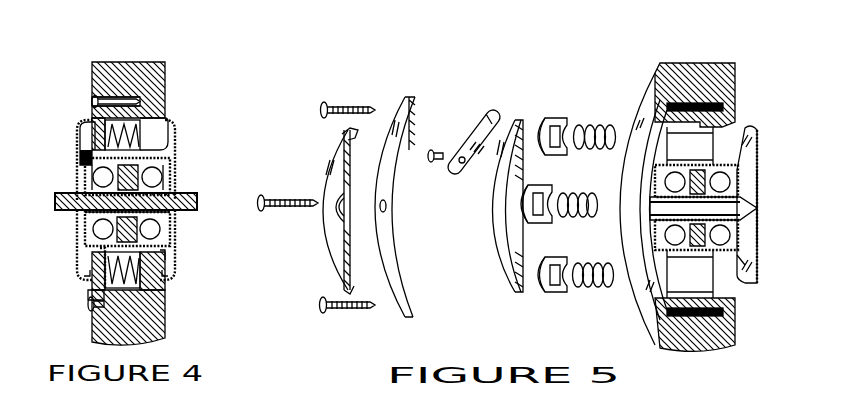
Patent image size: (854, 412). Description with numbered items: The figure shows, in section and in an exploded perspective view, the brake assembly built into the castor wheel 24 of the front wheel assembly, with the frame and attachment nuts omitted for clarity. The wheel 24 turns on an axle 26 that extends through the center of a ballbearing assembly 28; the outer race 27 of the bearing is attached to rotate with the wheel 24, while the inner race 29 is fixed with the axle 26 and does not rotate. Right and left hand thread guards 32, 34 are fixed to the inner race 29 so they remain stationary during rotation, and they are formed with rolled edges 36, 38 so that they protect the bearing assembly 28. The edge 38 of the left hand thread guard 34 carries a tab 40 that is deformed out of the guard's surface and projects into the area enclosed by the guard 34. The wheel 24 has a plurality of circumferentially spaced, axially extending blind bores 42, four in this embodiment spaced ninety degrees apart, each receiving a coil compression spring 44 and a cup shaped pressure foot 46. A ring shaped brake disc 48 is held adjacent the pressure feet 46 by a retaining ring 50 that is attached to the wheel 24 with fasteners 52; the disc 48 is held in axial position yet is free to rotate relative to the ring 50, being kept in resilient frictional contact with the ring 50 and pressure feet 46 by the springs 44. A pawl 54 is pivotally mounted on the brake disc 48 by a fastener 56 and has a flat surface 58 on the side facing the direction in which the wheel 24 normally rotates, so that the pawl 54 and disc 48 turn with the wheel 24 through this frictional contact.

In FIG. 4, the castor wheel 24 is at (120, 62).
In FIG. 5, the castor wheel 24 is at (650, 95).
In FIG. 4, the axle 26 is at (204, 203).
In FIG. 4, the outer race 27 is at (160, 250).
In FIG. 5, the outer race 27 is at (740, 265).
In FIG. 4, the ballbearing assembly 28 is at (172, 165).
In FIG. 5, the ballbearing assembly 28 is at (660, 232).
In FIG. 4, the inner race 29 is at (172, 220).
In FIG. 5, the inner race 29 is at (745, 212).
In FIG. 4, the right hand thread guard 32 is at (172, 180).
In FIG. 5, the right hand thread guard 32 is at (755, 175).
In FIG. 4, the left hand thread guard 34 is at (78, 160).
In FIG. 5, the left hand thread guard 34 is at (333, 240).
In FIG. 4, the rolled edge 36 is at (175, 130).
In FIG. 5, the rolled edge 36 is at (747, 135).
In FIG. 4, the rolled edge 38 is at (82, 276).
In FIG. 5, the rolled edge 38 is at (350, 292).
In FIG. 4, the tab 40 is at (82, 130).
In FIG. 5, the tab 40 is at (355, 140).
In FIG. 4, the blind bores 42 is at (158, 122).
In FIG. 5, the blind bores 42 is at (697, 140).
In FIG. 4, the coil compression spring 44 is at (145, 128).
In FIG. 5, the coil compression spring 44 is at (590, 125).
In FIG. 4, the cup shaped pressure foot 46 is at (160, 128).
In FIG. 5, the cup shaped pressure foot 46 is at (548, 118).
In FIG. 4, the brake disc 48 is at (100, 250).
In FIG. 5, the brake disc 48 is at (502, 240).
In FIG. 4, the retaining ring 50 is at (90, 290).
In FIG. 5, the retaining ring 50 is at (407, 263).
In FIG. 4, the fasteners 52 is at (90, 112).
In FIG. 5, the fasteners 52 is at (320, 102).
In FIG. 4, the pawl 54 is at (82, 162).
In FIG. 5, the pawl 54 is at (470, 148).
In FIG. 5, the fastener 56 is at (434, 165).
In FIG. 5, the flat surface 58 is at (492, 124).